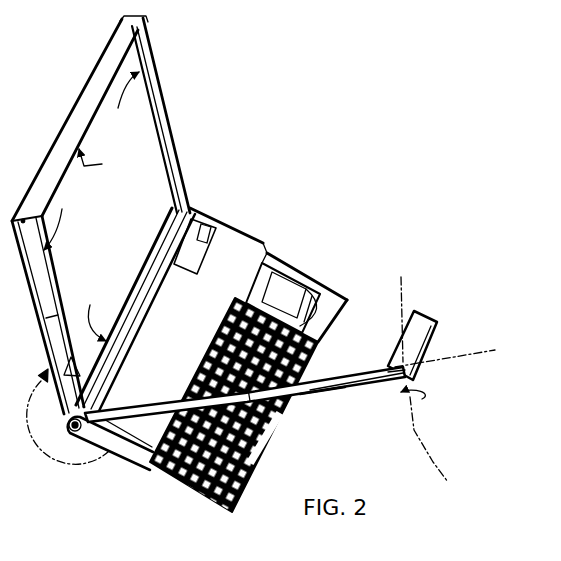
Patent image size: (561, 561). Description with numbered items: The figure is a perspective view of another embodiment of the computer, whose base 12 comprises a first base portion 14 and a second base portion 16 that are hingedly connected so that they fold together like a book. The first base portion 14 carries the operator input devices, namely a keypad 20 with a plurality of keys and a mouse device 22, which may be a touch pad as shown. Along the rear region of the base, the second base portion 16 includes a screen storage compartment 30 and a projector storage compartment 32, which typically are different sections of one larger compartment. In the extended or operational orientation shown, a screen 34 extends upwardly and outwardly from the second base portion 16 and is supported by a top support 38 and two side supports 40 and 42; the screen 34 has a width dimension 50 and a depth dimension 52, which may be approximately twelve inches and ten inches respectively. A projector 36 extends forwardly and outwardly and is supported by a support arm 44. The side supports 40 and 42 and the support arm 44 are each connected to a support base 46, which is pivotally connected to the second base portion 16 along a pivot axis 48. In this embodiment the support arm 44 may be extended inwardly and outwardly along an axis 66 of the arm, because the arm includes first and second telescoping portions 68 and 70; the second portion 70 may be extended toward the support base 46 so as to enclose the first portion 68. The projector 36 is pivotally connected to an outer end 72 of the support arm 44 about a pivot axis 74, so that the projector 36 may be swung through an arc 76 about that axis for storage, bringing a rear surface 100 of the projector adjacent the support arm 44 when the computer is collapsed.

The base 12 is at (177, 487).
The first base portion 14 is at (337, 292).
The second base portion 16 is at (247, 243).
The keypad 20 is at (158, 480).
The mouse device 22 is at (283, 292).
The screen storage compartment 30 is at (199, 215).
The projector storage compartment 32 is at (204, 242).
The screen 34 is at (140, 213).
The projector 36 is at (155, 266).
The top support 38 is at (77, 128).
The side support 40 is at (47, 282).
The side support 42 is at (170, 124).
The support arm 44 is at (349, 367).
The support base 46 is at (124, 334).
The pivot axis 48 is at (50, 470).
The width dimension 50 is at (91, 161).
The depth dimension 52 is at (97, 262).
The axis 66 is at (482, 357).
The first telescoping portion 68 is at (167, 403).
The second telescoping portion 70 is at (337, 387).
The outer end 72 is at (387, 377).
The pivot axis 74 is at (440, 388).
The arc 76 is at (397, 407).
The rear surface 100 is at (432, 346).